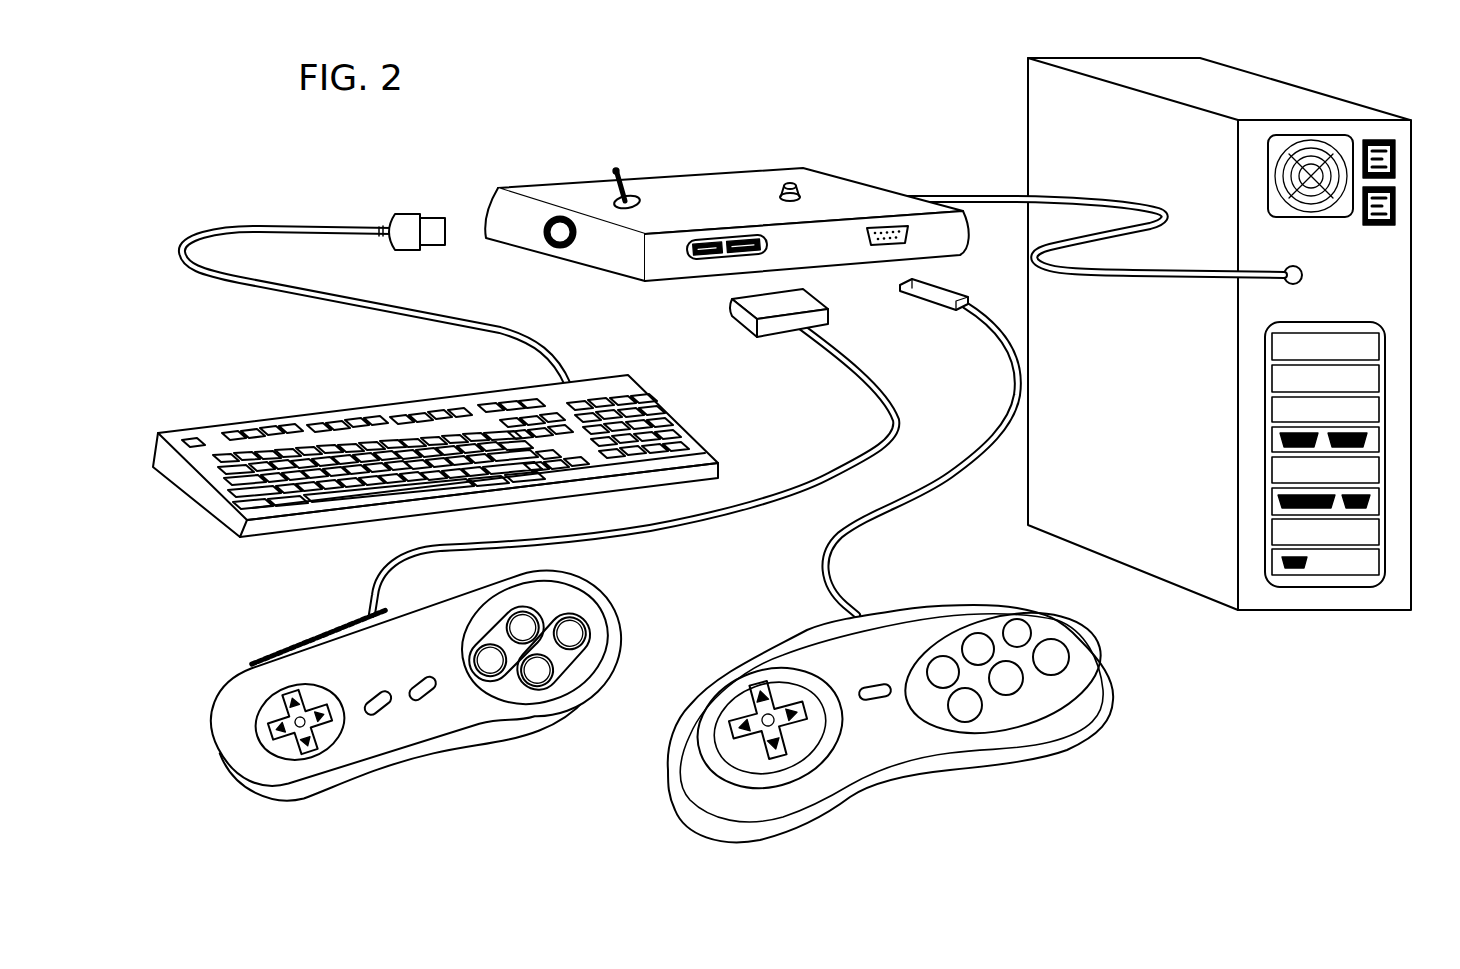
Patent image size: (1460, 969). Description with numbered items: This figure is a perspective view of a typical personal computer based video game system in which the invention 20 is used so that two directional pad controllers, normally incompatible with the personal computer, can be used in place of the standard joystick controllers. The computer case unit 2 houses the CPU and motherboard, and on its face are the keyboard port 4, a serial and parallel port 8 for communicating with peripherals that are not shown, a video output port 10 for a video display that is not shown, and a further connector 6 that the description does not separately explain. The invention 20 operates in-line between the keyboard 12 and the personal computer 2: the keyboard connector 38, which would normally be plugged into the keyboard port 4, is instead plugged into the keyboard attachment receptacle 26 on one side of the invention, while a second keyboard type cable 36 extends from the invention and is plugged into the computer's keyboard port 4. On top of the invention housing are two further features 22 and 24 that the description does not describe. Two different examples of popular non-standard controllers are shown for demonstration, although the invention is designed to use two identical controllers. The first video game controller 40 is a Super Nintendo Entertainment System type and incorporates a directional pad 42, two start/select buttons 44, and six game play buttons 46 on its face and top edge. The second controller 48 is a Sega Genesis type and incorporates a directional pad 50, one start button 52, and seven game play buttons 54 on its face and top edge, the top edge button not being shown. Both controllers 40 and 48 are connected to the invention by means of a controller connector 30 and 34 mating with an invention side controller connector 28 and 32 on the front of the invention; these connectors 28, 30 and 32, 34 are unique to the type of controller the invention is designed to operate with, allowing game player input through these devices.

The computer case unit 2 is at (1080, 152).
The keyboard port 4 is at (1308, 270).
The serial ports 6 is at (1373, 437).
The serial and parallel port 8 is at (1372, 505).
The video output port 10 is at (1320, 563).
The keyboard 12 is at (273, 398).
The invention 20 is at (710, 183).
The function/program switch 22 is at (600, 170).
The push button 24 is at (778, 172).
The keyboard attachment receptacle 26 is at (547, 248).
The invention side controller connector 28 is at (688, 265).
The controller connector 30 is at (735, 327).
The invention side controller connector 32 is at (868, 247).
The controller connector 34 is at (920, 307).
The second keyboard type cable 36 is at (932, 192).
The keyboard connector 38 is at (400, 208).
The video game controller 40 is at (351, 633).
The directional pad 42 is at (263, 735).
The start/select buttons 44 is at (412, 717).
The game play buttons 46 is at (590, 622).
The controller 48 is at (840, 647).
The directional pad 50 is at (725, 737).
The start button 52 is at (887, 713).
The game play buttons 54 is at (1073, 645).